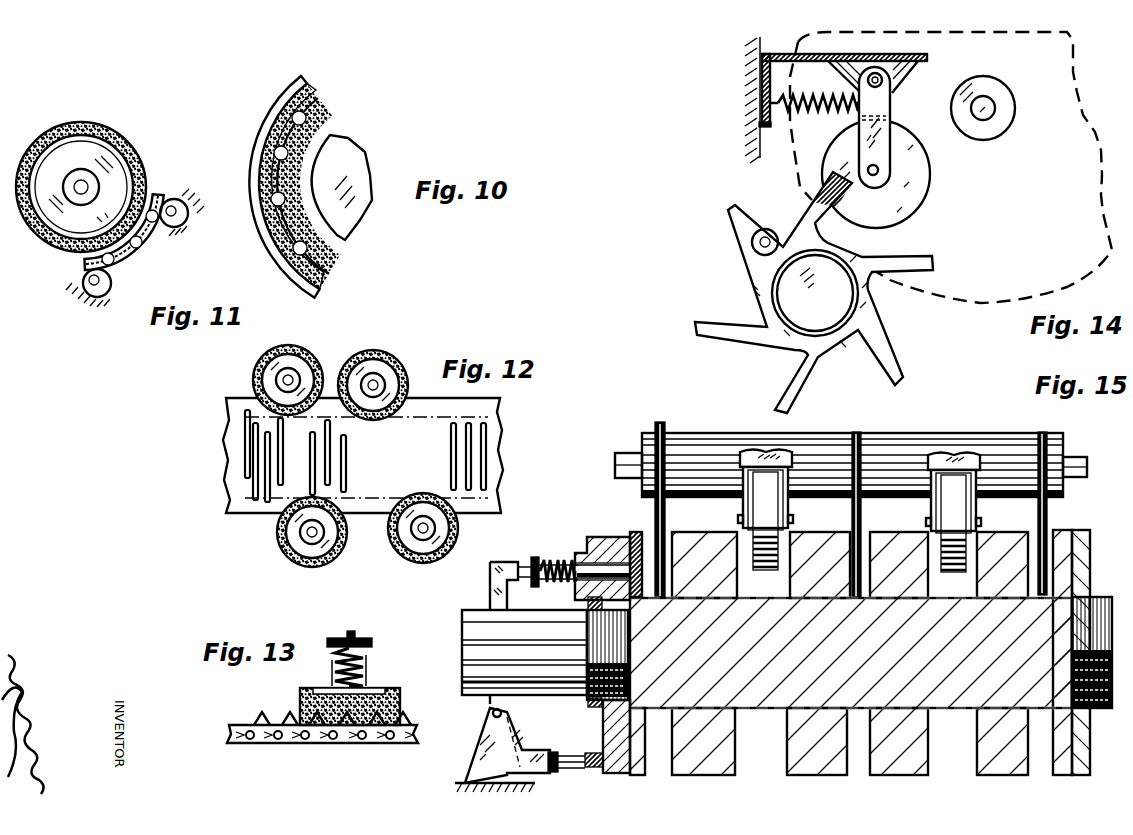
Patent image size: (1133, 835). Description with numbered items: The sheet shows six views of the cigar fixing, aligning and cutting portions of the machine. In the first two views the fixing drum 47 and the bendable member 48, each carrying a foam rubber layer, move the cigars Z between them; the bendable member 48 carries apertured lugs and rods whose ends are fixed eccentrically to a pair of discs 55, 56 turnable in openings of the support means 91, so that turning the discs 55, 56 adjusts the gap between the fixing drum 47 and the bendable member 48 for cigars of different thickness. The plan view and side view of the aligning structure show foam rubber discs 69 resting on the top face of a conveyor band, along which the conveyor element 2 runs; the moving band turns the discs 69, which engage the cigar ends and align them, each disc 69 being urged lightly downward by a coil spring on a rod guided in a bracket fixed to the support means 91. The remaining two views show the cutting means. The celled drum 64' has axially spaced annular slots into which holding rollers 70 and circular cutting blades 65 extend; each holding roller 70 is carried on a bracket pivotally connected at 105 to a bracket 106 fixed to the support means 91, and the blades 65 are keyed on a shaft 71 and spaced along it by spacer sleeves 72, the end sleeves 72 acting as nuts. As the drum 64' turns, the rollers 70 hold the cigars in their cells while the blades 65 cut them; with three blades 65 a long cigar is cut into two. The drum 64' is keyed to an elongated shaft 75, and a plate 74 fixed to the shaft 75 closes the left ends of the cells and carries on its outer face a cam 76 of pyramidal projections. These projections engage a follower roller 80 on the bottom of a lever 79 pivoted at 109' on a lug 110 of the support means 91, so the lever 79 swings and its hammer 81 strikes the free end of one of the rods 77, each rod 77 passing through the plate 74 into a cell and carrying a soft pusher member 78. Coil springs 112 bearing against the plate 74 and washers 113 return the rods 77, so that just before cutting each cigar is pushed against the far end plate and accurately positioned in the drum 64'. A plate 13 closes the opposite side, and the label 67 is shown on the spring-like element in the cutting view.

In FIG. 11, the chain 2 is at (127, 247).
In FIG. 10, the chain 2 is at (295, 105).
In FIG. 12, the chain 2 is at (347, 457).
In FIG. 14, the chain 2 is at (766, 229).
In FIG. 15, the end plate 13 is at (1075, 770).
In FIG. 11, the fixing drum 47 is at (117, 140).
In FIG. 10, the fixing drum 47 is at (345, 165).
In FIG. 11, the bendable member 48 is at (150, 192).
In FIG. 10, the bendable member 48 is at (263, 168).
In FIG. 11, the disc 55 is at (101, 300).
In FIG. 11, the disc 56 is at (186, 200).
In FIG. 14, the celled drum 64' is at (740, 310).
In FIG. 15, the celled drum 64' is at (851, 668).
In FIG. 14, the cutting blades 65 is at (978, 287).
In FIG. 15, the cutting blades 65 is at (1042, 432).
In FIG. 14, the spring 67 is at (792, 72).
In FIG. 12, the foam rubber discs 69 is at (302, 358).
In FIG. 13, the foam rubber discs 69 is at (400, 697).
In FIG. 14, the holding rollers 70 is at (918, 153).
In FIG. 15, the holding rollers 70 is at (770, 507).
In FIG. 14, the shaft 71 is at (1000, 106).
In FIG. 15, the shaft 71 is at (1073, 458).
In FIG. 15, the spacer sleeves 72 is at (920, 438).
In FIG. 15, the plate 74 is at (616, 736).
In FIG. 14, the elongated shaft 75 is at (814, 292).
In FIG. 15, the elongated shaft 75 is at (462, 633).
In FIG. 15, the cam 76 is at (611, 774).
In FIG. 15, the rods 77 is at (583, 537).
In FIG. 15, the pusher members 78 is at (633, 534).
In FIG. 15, the lever 79 is at (542, 774).
In FIG. 15, the follower roller 80 is at (562, 752).
In FIG. 15, the hammer 81 is at (490, 570).
In FIG. 14, the support means 91 is at (745, 90).
In FIG. 15, the support means 91 is at (457, 783).
In FIG. 14, the pivotal connection 105 is at (895, 76).
In FIG. 14, the bracket 106 is at (775, 54).
In FIG. 15, the pivot 109' is at (473, 714).
In FIG. 15, the lug 110 is at (480, 745).
In FIG. 15, the coil springs 112 is at (555, 559).
In FIG. 15, the washers 113 is at (533, 557).